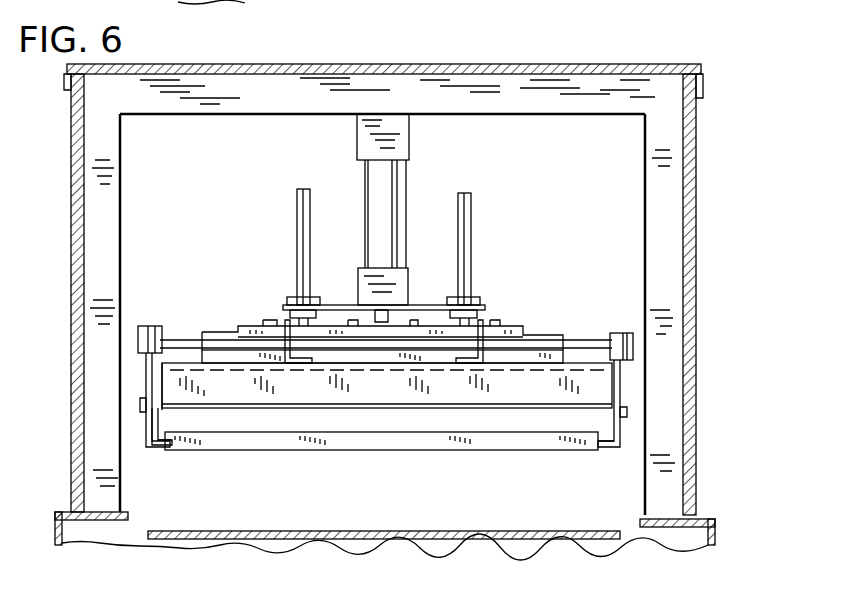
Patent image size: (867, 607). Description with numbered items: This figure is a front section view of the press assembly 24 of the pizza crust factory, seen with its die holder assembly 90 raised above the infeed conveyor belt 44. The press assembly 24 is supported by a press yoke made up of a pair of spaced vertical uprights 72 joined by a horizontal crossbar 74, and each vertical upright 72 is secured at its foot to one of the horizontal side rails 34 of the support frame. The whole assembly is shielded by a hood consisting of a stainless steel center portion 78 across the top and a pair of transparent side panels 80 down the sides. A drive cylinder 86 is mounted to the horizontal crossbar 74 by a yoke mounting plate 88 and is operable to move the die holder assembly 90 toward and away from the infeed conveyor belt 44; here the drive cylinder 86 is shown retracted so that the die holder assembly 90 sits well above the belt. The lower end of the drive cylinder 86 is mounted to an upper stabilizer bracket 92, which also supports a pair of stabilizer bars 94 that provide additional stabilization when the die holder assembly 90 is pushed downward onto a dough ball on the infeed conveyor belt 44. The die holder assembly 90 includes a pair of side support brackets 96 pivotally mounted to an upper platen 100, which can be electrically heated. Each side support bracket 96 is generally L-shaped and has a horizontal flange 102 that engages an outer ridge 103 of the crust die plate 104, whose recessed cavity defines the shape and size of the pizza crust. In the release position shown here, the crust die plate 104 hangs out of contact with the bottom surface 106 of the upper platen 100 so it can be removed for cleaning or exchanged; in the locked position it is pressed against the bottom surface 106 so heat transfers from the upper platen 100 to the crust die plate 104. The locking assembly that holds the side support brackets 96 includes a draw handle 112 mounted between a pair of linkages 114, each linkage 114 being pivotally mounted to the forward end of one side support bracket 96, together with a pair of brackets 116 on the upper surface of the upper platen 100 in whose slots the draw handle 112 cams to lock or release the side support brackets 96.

The press assembly 24 is at (394, 267).
The horizontal side rail 34 is at (65, 513).
The infeed conveyor belt 44 is at (368, 532).
The vertical upright 72 is at (387, 307).
The horizontal crossbar 74 is at (266, 100).
The center portion 78 is at (428, 64).
The transparent side panel 80 is at (72, 192).
The drive cylinder 86 is at (405, 200).
The yoke mounting plate 88 is at (410, 122).
The die holder assembly 90 is at (328, 379).
The upper stabilizer bracket 92 is at (347, 295).
The stabilizer bar 94 is at (297, 225).
The side support bracket 96 is at (152, 430).
The upper platen 100 is at (319, 343).
The horizontal flange 102 is at (162, 442).
The outer ridge 103 is at (167, 433).
The crust die plate 104 is at (487, 437).
The bottom surface 106 is at (290, 408).
The draw handle 112 is at (178, 338).
The linkage 114 is at (150, 372).
The bracket 116 is at (287, 320).